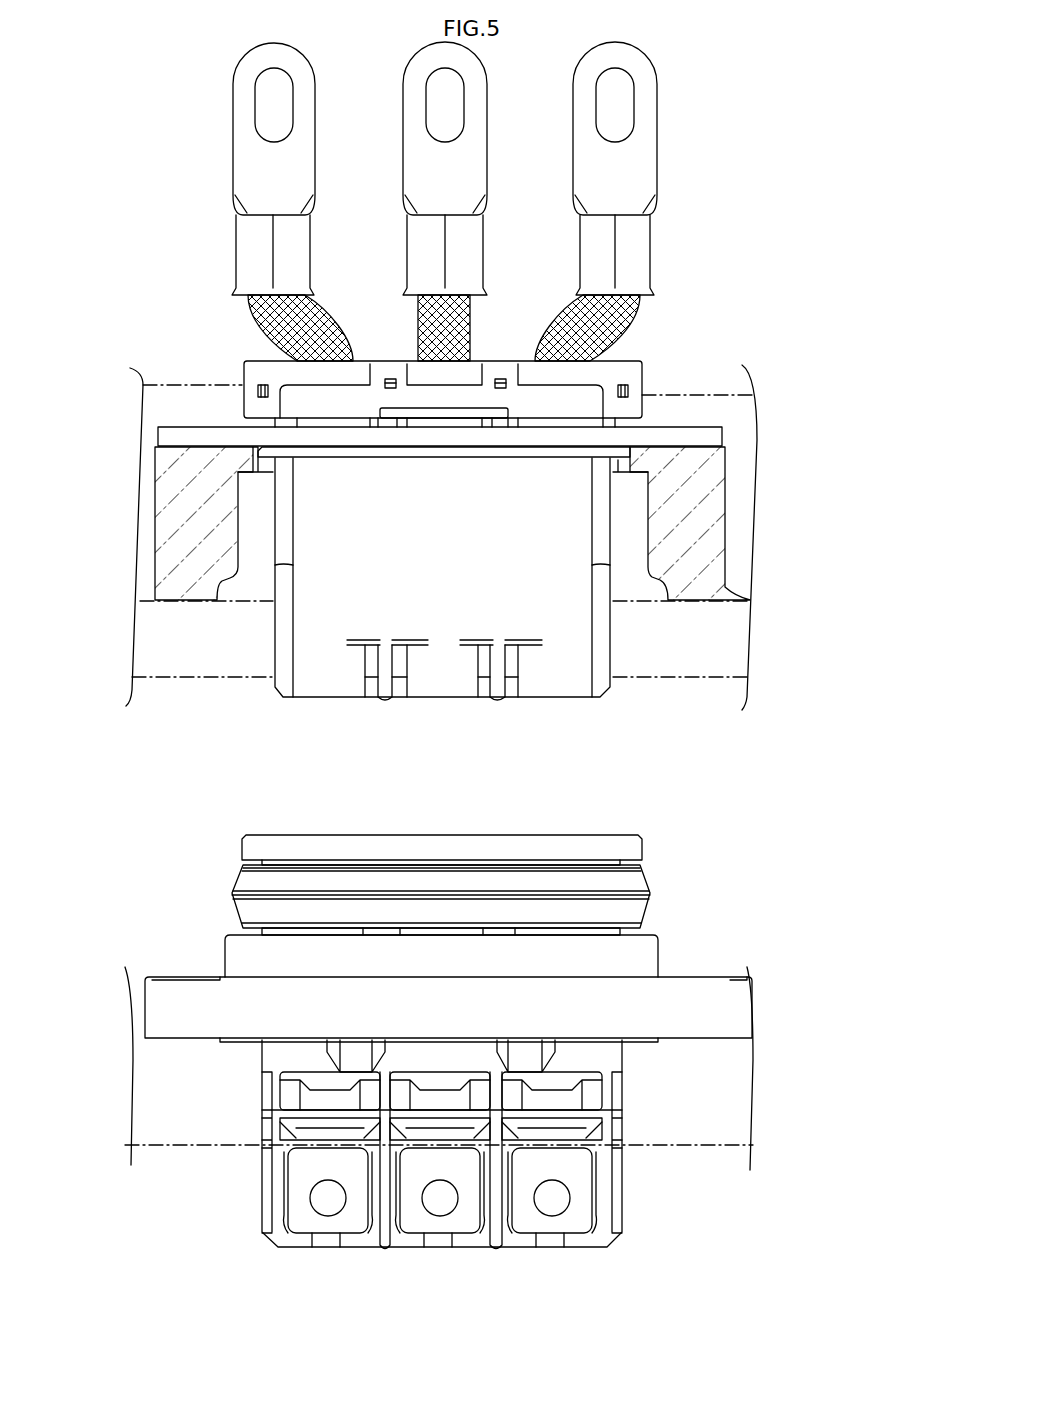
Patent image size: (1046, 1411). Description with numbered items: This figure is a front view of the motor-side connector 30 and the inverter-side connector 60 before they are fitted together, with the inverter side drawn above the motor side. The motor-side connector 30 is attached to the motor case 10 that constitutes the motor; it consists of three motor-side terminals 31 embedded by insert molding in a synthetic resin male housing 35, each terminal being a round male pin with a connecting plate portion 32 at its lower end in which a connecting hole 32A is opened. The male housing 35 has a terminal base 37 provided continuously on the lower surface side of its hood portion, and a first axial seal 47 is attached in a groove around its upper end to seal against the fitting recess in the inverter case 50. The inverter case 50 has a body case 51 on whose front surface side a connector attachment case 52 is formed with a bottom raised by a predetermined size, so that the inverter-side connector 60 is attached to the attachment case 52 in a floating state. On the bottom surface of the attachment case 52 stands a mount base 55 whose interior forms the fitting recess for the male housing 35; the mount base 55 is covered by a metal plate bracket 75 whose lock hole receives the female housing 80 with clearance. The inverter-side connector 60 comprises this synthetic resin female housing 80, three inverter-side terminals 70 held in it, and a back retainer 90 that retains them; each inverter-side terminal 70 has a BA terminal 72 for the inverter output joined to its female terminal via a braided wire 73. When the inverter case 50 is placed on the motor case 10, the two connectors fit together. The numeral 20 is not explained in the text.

The inverter-side connector 60 is at (195, 270).
The inverter-side terminal 70 is at (650, 247).
The BA terminal 72 is at (657, 140).
The braided wire 73 is at (558, 326).
The back retainer 90 is at (643, 377).
The bracket 75 is at (685, 428).
The inverter case 50 is at (690, 390).
The mount base 55 is at (733, 480).
The connector attachment case 52 is at (747, 582).
The body case 51 is at (697, 678).
The female housing 80 is at (273, 638).
The male housing 35 is at (643, 853).
The first axial seal 47 is at (645, 917).
The flange housing 20 is at (198, 977).
The motor case 10 is at (707, 1147).
The motor-side connector 30 is at (645, 1168).
The terminal base 37 is at (260, 1172).
The connecting plate portion 32 is at (462, 1220).
The connecting hole 32A is at (422, 1202).
The motor-side terminal 31 is at (575, 1213).